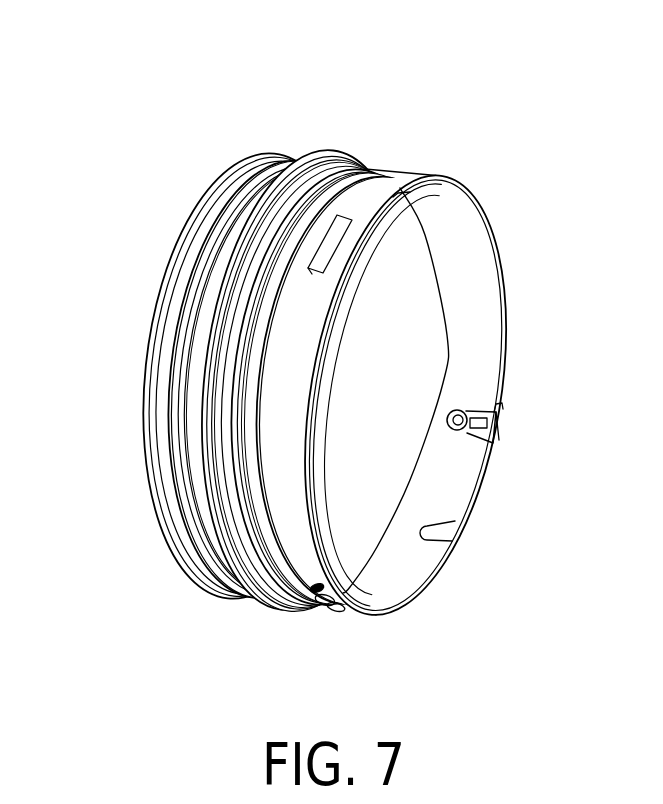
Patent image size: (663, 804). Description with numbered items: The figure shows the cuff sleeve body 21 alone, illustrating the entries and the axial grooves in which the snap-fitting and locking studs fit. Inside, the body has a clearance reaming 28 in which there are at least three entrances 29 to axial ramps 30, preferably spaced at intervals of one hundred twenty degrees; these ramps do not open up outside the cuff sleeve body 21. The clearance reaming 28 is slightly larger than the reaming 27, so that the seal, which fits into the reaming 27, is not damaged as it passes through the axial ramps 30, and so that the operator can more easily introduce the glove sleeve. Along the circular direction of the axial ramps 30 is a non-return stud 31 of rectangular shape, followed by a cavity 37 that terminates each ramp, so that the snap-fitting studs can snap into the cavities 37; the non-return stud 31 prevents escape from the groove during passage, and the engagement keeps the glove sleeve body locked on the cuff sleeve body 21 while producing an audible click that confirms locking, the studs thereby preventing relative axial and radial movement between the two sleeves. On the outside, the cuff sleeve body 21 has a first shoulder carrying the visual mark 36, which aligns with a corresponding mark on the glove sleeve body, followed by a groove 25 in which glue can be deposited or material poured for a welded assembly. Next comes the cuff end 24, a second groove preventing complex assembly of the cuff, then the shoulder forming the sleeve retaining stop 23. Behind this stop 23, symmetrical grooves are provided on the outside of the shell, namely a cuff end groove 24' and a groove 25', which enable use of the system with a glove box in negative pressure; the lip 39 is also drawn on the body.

The cuff sleeve body 21 is at (245, 168).
The sleeve retaining stop 23 is at (330, 153).
The cuff end 24 is at (281, 387).
The cuff end groove 24' is at (241, 384).
The groove 25 is at (271, 388).
The groove 25' is at (221, 379).
The reaming 27 is at (410, 298).
The clearance reaming 28 is at (397, 580).
The entrance 29 is at (502, 406).
The axial ramp 30 is at (497, 422).
The non-return stud 31 is at (478, 430).
The visual mark 36 is at (335, 232).
The cavity 37 is at (468, 437).
The band lip 39 is at (287, 548).